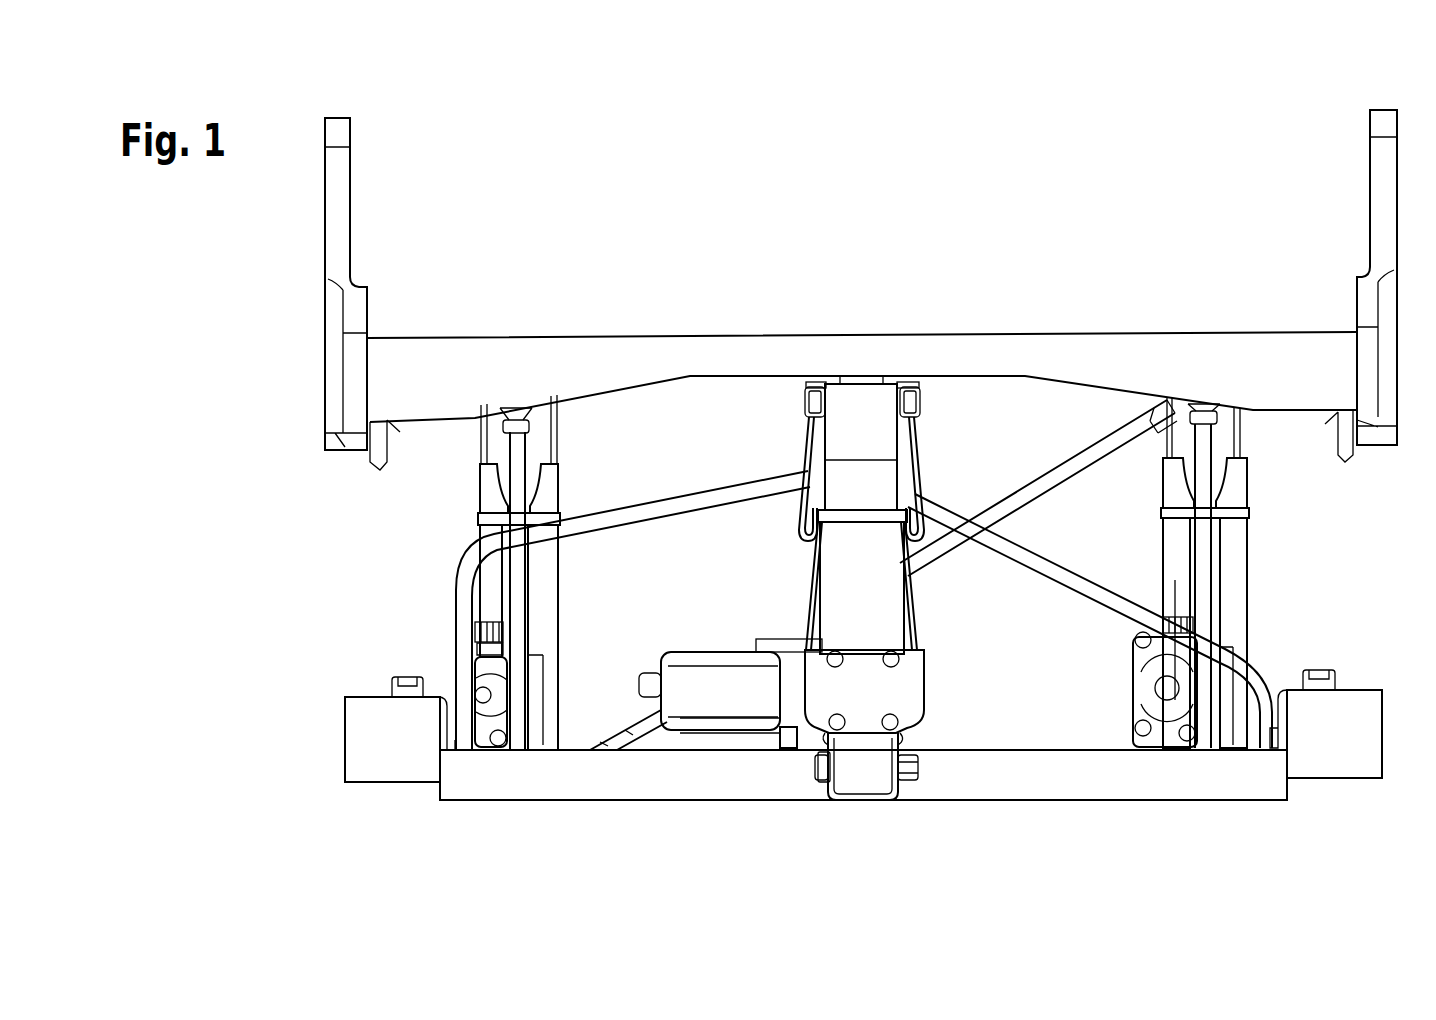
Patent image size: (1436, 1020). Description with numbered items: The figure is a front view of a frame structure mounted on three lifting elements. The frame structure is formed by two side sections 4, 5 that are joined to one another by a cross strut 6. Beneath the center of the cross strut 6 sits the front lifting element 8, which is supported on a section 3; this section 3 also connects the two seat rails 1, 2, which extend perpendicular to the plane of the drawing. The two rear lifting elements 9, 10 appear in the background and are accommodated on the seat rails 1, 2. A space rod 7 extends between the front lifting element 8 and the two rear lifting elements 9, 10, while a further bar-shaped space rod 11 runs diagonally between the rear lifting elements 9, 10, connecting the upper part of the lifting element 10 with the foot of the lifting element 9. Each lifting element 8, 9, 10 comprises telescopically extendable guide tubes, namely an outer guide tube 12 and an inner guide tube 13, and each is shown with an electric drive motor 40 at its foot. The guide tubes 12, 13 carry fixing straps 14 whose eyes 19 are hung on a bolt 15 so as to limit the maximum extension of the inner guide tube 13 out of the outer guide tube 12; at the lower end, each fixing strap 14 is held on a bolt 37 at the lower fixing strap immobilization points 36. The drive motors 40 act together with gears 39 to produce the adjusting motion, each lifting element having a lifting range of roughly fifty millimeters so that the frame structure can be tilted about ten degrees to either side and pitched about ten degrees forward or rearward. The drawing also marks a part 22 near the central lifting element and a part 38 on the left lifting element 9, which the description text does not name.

The seat rail 1 is at (397, 760).
The seat rail 2 is at (1330, 760).
The section 3 is at (1020, 780).
The side section 4 is at (340, 228).
The side section 5 is at (1384, 210).
The cross strut 6 is at (1140, 348).
The space rod 7 is at (688, 500).
The lifting element 8 is at (772, 566).
The lifting element 9 is at (420, 520).
The lifting element 10 is at (1282, 541).
The space rod 11 is at (1100, 478).
The outer guide tube 12 is at (545, 492).
The inner guide tube 13 is at (548, 438).
The fixing strap 14 is at (926, 488).
The bolt 15 is at (806, 398).
The eye 19 is at (921, 410).
The flange 22 is at (795, 740).
The lower fixing strap immobilization point 36 is at (910, 798).
The bolt 37 is at (822, 775).
The band 38 is at (482, 518).
The gear 39 is at (897, 673).
The electric drive motor 40 is at (466, 697).